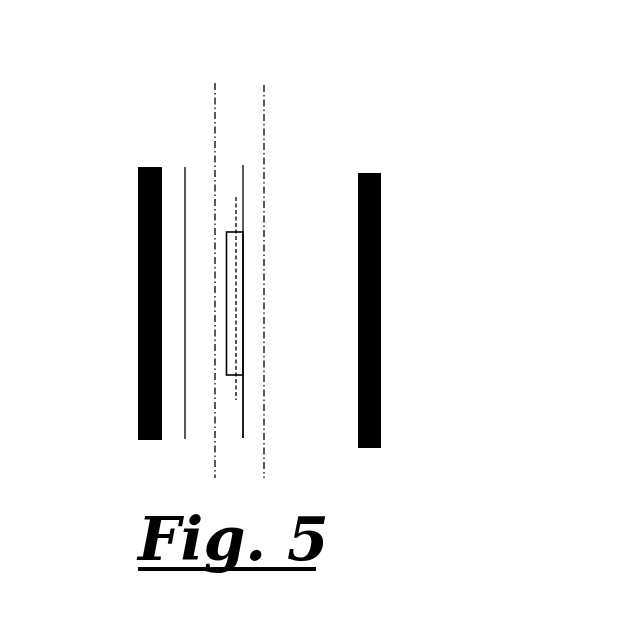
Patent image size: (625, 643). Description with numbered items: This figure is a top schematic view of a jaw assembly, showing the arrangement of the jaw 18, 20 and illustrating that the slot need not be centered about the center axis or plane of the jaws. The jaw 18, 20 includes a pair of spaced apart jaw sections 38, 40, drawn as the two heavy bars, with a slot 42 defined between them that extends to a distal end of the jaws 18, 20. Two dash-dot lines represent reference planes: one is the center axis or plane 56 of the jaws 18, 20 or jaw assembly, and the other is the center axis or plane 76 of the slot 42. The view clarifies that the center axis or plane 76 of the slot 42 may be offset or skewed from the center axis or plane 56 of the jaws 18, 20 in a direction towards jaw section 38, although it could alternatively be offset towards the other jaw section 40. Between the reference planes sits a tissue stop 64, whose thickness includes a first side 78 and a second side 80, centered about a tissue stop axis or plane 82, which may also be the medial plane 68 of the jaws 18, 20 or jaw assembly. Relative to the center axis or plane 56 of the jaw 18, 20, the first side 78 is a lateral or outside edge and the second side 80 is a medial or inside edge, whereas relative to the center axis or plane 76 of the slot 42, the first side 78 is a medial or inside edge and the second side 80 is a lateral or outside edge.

The first jaw 18 is at (365, 118).
The second jaw 20 is at (369, 114).
The jaw section 38 is at (138, 206).
The jaw section 40 is at (382, 202).
The slot 42 is at (190, 172).
The center axis or plane of the jaws 56 is at (264, 112).
The tissue stop 64 is at (242, 339).
The medial plane 68 is at (233, 416).
The center axis or plane of the slots 76 is at (215, 92).
The first side 78 is at (227, 266).
The second side 80 is at (243, 320).
The tissue stop axis or plane 82 is at (234, 213).